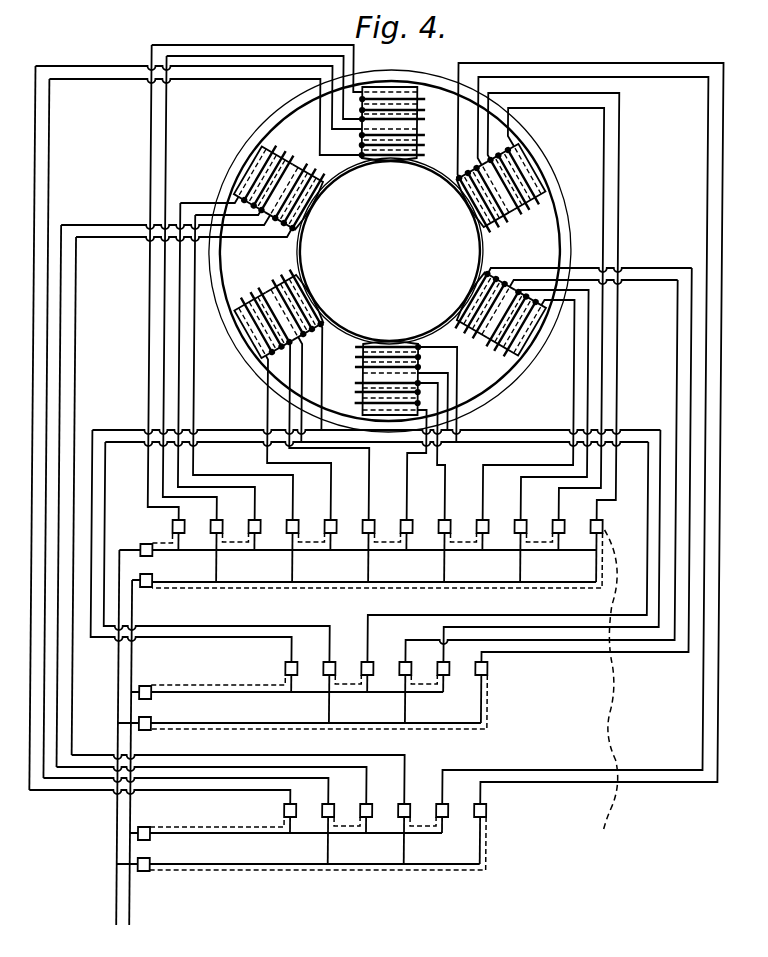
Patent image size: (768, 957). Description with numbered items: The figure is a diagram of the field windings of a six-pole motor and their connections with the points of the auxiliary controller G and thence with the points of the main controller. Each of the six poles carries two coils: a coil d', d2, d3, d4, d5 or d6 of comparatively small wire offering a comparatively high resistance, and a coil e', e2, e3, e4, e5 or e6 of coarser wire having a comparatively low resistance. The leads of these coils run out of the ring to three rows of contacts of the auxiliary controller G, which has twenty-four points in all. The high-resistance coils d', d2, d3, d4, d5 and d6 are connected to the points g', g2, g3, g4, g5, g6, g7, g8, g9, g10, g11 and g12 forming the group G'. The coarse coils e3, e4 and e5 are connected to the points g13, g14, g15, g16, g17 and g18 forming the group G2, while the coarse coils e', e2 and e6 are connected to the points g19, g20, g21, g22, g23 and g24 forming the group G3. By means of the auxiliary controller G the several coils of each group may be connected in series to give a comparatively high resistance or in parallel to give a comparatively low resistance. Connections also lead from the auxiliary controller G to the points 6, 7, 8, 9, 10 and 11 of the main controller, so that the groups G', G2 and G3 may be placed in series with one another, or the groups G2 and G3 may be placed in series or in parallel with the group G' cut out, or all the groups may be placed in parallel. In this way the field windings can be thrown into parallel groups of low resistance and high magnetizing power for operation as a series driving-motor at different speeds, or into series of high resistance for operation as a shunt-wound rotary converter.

The point of the main controller 6 is at (135, 538).
The point of the main controller 7 is at (142, 592).
The point of the main controller 8 is at (141, 682).
The point of the main controller 9 is at (134, 734).
The point of the main controller 10 is at (143, 823).
The point of the main controller 11 is at (136, 879).
The point of group G' g' is at (185, 525).
The point of group G' g2 is at (224, 541).
The point of group G' g3 is at (262, 525).
The point of group G' g4 is at (300, 541).
The point of group G' g5 is at (338, 525).
The point of group G' g6 is at (376, 541).
The point of group G' g7 is at (414, 525).
The point of group G' g8 is at (452, 541).
The point of group G' g9 is at (490, 525).
The point of group G' g10 is at (531, 541).
The point of group G' g11 is at (569, 525).
The point of group G' g12 is at (607, 541).
The point of group G2 g13 is at (286, 668).
The point of group G2 g14 is at (328, 683).
The point of group G2 g15 is at (366, 668).
The point of group G2 g16 is at (404, 683).
The point of group G2 g17 is at (442, 668).
The point of group G2 g18 is at (489, 668).
The point of group G3 g19 is at (274, 812).
The point of group G3 g20 is at (325, 824).
The point of group G3 g21 is at (365, 808).
The point of group G3 g22 is at (416, 823).
The point of group G3 g23 is at (451, 812).
The point of group G3 g24 is at (489, 810).
The group of points of the auxiliary controller G' is at (374, 566).
The group of points of the auxiliary controller G2 is at (316, 707).
The group of contacts of the auxiliary controller G3 is at (315, 848).
The auxiliary controller G is at (623, 681).
The field coil d' is at (403, 105).
The field coil e' is at (400, 142).
The field coil d2 is at (267, 173).
The field coil e2 is at (301, 195).
The field coil d3 is at (262, 319).
The field coil e3 is at (294, 304).
The field coil d4 is at (377, 397).
The field coil e4 is at (377, 361).
The field coil d5 is at (515, 333).
The field coil e5 is at (479, 315).
The field coil d6 is at (517, 196).
The field coil e6 is at (486, 208).